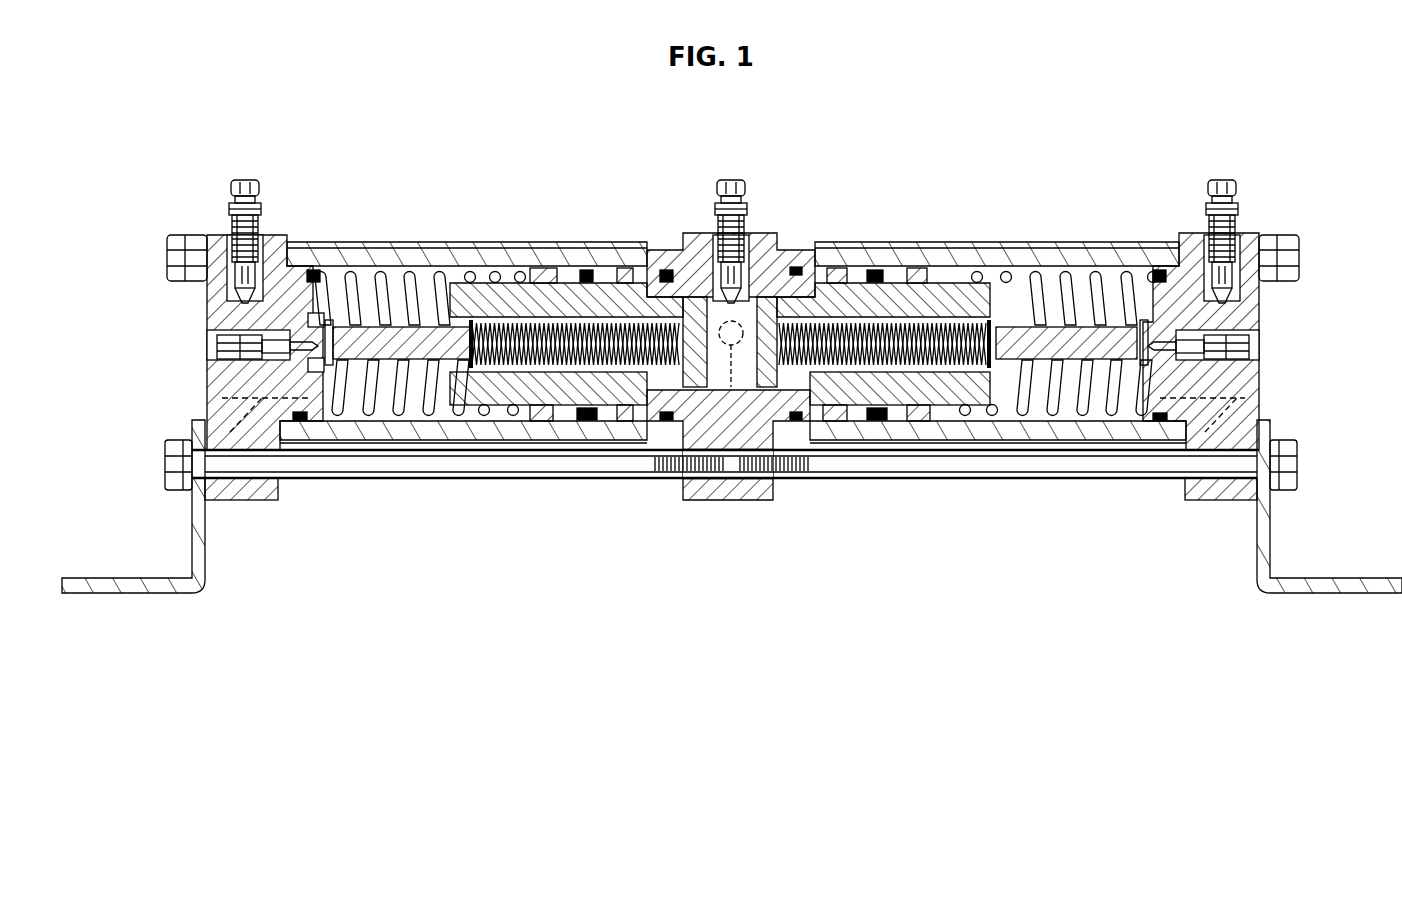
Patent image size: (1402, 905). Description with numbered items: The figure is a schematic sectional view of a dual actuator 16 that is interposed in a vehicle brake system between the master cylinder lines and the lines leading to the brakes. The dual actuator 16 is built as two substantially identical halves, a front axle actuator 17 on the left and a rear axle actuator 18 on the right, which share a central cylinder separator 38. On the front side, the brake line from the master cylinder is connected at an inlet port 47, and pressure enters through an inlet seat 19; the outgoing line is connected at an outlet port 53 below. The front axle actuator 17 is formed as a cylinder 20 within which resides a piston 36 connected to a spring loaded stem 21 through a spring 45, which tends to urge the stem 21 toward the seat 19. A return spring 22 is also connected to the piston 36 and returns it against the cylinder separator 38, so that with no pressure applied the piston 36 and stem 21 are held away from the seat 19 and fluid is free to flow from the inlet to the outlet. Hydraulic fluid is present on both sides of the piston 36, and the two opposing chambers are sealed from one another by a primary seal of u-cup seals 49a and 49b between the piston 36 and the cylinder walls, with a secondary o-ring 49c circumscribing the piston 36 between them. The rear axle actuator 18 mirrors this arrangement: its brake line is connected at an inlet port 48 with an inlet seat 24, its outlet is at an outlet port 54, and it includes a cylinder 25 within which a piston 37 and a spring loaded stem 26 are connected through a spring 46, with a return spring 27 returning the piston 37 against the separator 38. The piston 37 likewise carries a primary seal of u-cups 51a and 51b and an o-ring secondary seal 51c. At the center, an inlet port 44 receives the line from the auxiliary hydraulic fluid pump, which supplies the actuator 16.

The dual actuator 16 is at (326, 136).
The front axle actuator 17 is at (183, 391).
The rear axle actuator 18 is at (1284, 373).
The inlet seat 19 is at (306, 340).
The cylinder 20 is at (427, 282).
The spring loaded stem 21 is at (401, 343).
The return spring 22 is at (382, 268).
The inlet seat 24 is at (1221, 298).
The cylinder 25 is at (1057, 276).
The spring loaded stem 26 is at (1066, 343).
The return spring 27 is at (1099, 275).
The piston 36 is at (566, 344).
The piston 37 is at (883, 344).
The cylinder separator 38 is at (746, 436).
The inlet port 44 is at (731, 288).
The spring 45 is at (596, 333).
The spring 46 is at (857, 333).
The inlet port 47 is at (212, 341).
The inlet port 48 is at (1259, 336).
The u-cup seal 49a is at (545, 268).
The u-cup seal 49b is at (623, 270).
The o-ring 49c is at (586, 270).
The u-cup 51a is at (916, 268).
The u-cup 51b is at (838, 268).
The o-ring secondary seal 51c is at (873, 268).
The outlet port 53 is at (232, 504).
The outlet port 54 is at (1227, 502).